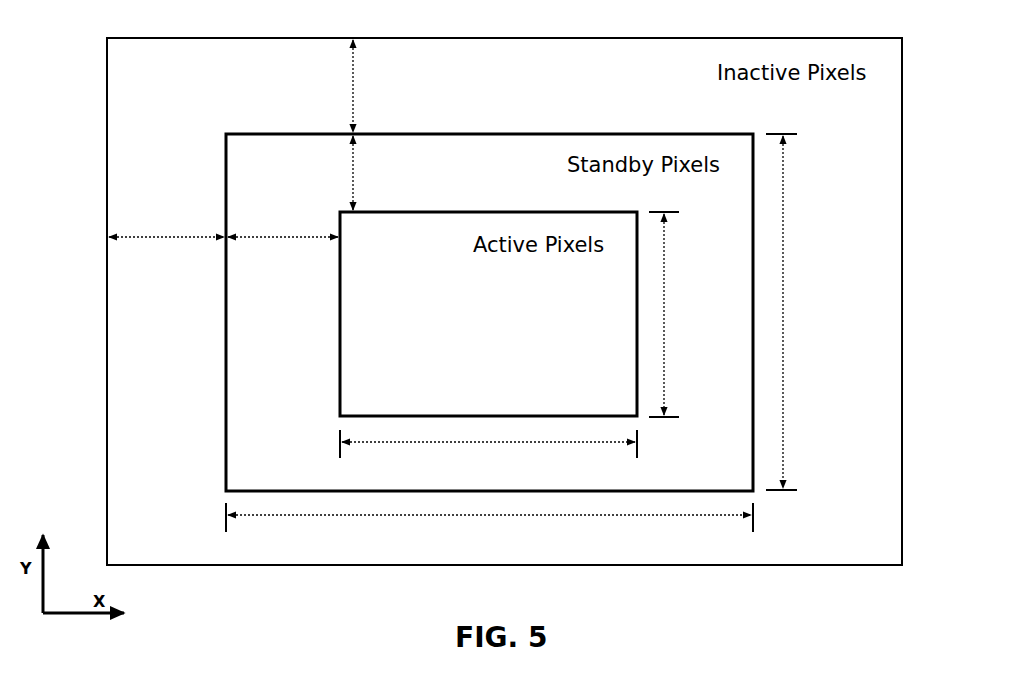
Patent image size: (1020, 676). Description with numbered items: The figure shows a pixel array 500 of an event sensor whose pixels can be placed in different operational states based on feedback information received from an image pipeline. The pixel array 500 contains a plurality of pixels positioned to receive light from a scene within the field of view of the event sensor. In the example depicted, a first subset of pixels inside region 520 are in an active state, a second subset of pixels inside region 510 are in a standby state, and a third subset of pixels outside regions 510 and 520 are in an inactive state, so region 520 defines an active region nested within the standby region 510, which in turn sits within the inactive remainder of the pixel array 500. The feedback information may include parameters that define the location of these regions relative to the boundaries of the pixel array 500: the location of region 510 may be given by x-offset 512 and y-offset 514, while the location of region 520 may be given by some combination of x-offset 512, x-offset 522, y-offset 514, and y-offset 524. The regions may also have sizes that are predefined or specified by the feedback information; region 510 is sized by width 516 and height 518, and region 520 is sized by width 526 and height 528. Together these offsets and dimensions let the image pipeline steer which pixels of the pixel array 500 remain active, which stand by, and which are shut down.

The pixel array 500 is at (107, 307).
The region 510 is at (226, 365).
The x-offset 512 is at (190, 244).
The y-offset 514 is at (353, 70).
The width 516 is at (500, 518).
The height 518 is at (785, 350).
The region 520 is at (340, 306).
The x-offset 522 is at (312, 244).
The y-offset 524 is at (353, 168).
The width 526 is at (556, 444).
The height 528 is at (666, 337).